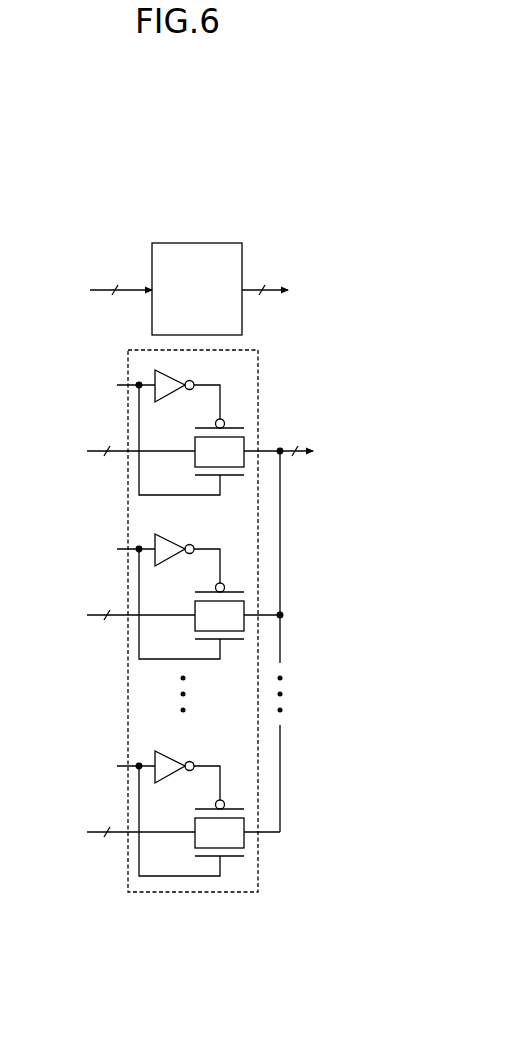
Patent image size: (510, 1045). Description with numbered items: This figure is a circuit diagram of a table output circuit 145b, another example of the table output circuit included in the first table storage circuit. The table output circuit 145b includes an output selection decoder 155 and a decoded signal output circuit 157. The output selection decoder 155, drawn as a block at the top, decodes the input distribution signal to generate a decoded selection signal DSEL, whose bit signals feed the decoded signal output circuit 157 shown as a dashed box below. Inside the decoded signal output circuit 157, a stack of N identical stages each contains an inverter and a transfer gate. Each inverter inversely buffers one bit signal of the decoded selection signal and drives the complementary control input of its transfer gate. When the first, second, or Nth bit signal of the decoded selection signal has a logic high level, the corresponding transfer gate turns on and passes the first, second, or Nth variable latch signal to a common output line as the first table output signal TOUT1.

The table output circuit 145b is at (389, 177).
The output selection decoder 155 is at (193, 241).
The decoded signal output circuit 157 is at (259, 374).